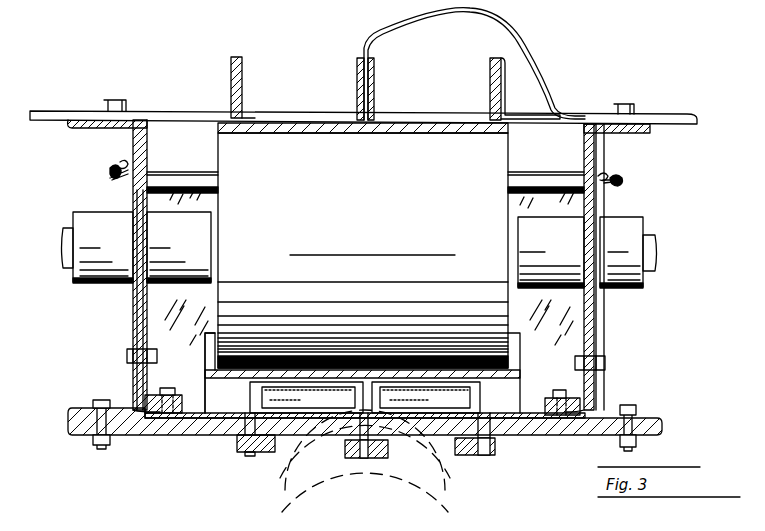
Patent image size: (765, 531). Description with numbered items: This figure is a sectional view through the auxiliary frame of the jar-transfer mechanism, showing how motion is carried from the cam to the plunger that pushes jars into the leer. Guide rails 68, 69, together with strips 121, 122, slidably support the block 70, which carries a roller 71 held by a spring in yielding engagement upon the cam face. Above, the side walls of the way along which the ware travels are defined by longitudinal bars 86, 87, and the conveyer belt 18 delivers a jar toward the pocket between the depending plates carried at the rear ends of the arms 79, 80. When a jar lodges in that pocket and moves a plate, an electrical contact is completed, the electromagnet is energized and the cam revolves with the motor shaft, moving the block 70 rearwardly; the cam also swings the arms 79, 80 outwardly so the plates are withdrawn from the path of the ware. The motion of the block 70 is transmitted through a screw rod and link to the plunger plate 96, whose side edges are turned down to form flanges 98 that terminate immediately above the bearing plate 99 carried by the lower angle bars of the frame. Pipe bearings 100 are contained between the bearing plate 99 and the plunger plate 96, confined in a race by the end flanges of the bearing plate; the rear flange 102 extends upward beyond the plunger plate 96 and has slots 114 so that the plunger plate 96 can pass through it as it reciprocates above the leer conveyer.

The conveyer belt 18 is at (325, 130).
The guide rail 68 is at (553, 430).
The guide rail 69 is at (130, 428).
The block 70 is at (430, 432).
The roller 71 is at (353, 457).
The arm 79 is at (626, 182).
The arm 80 is at (110, 176).
The bar 86 is at (492, 77).
The bar 87 is at (242, 76).
The plunger plate 96 is at (300, 386).
The flanges 98 is at (212, 433).
The bearing plate 99 is at (177, 418).
The pipe bearings 100 is at (233, 433).
The rear flange 102 is at (212, 390).
The slots 114 is at (217, 388).
The strip 121 is at (482, 460).
The strip 122 is at (263, 454).